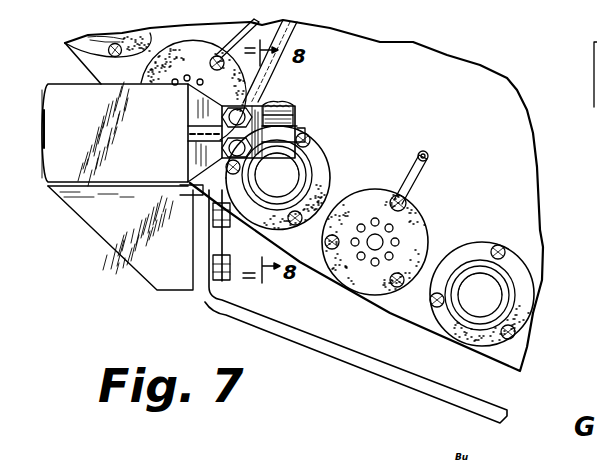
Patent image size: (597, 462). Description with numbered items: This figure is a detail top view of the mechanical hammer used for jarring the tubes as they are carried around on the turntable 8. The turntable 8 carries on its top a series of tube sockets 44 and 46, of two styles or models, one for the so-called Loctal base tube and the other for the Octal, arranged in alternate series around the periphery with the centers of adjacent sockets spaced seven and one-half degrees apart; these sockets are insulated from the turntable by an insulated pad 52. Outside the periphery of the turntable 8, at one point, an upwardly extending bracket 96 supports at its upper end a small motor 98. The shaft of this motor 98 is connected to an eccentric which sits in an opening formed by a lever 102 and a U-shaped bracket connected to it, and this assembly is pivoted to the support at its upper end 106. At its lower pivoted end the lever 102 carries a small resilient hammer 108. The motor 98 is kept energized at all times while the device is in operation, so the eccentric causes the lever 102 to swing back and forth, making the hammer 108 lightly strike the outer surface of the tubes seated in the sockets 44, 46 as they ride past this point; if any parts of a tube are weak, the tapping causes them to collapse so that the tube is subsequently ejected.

The turntable 8 is at (515, 133).
The tube socket 44 is at (482, 250).
The tube socket 46 is at (420, 214).
The insulated pad 52 is at (330, 192).
The bracket 96 is at (205, 280).
The motor 98 is at (84, 172).
The lever 102 is at (290, 106).
The upper end 106 is at (285, 133).
The resilient hammer 108 is at (290, 118).